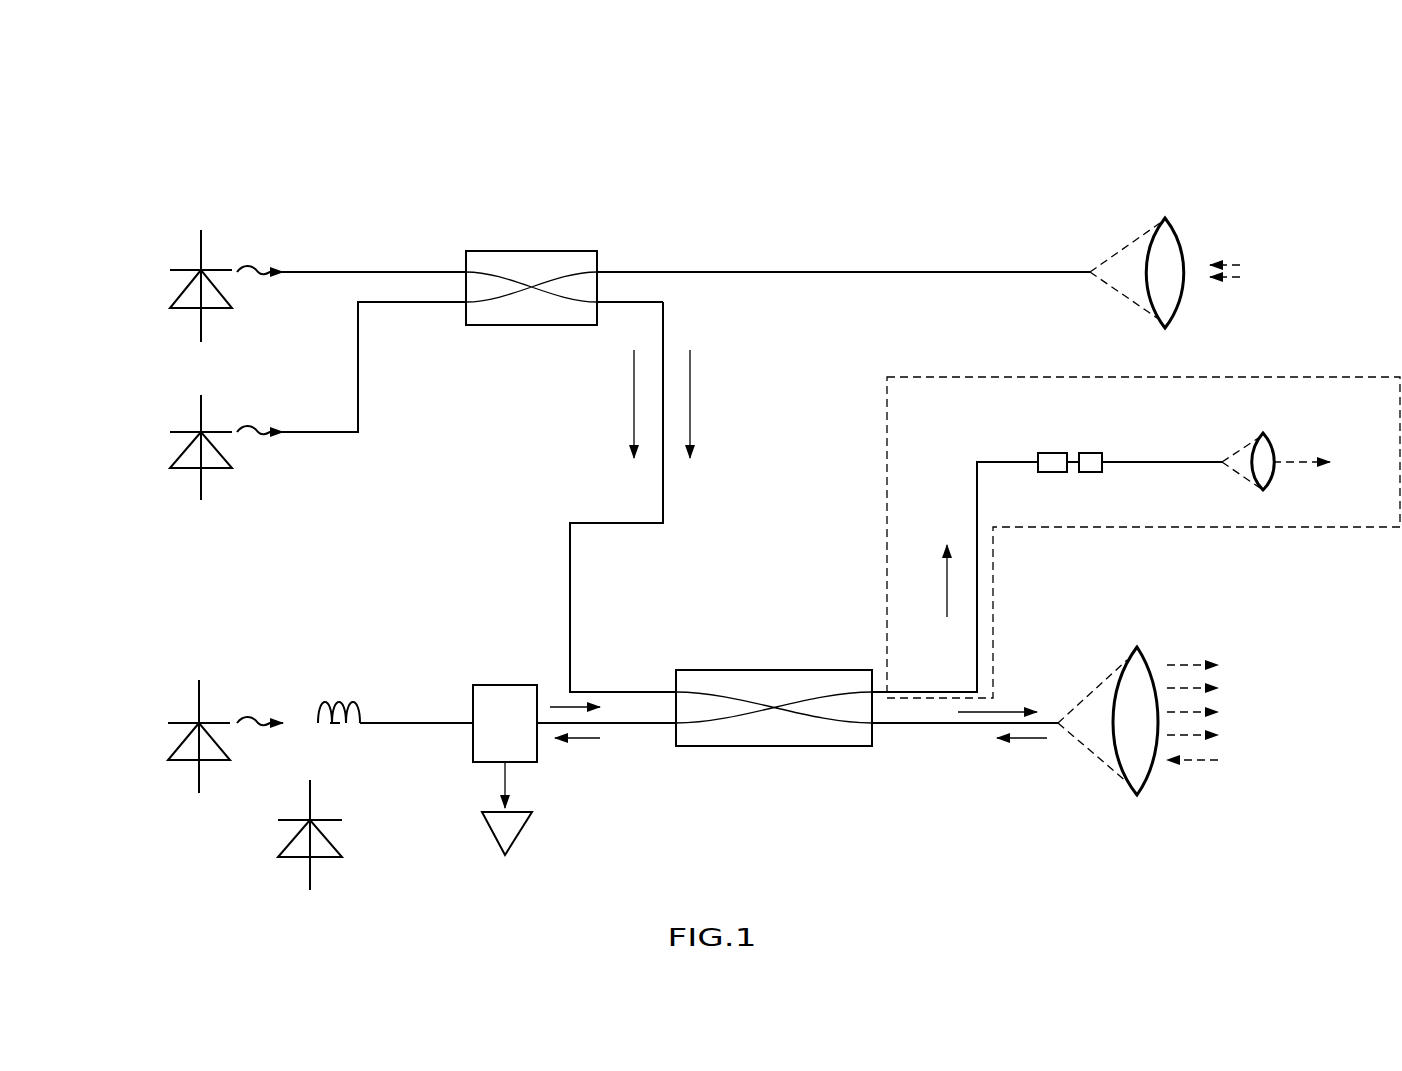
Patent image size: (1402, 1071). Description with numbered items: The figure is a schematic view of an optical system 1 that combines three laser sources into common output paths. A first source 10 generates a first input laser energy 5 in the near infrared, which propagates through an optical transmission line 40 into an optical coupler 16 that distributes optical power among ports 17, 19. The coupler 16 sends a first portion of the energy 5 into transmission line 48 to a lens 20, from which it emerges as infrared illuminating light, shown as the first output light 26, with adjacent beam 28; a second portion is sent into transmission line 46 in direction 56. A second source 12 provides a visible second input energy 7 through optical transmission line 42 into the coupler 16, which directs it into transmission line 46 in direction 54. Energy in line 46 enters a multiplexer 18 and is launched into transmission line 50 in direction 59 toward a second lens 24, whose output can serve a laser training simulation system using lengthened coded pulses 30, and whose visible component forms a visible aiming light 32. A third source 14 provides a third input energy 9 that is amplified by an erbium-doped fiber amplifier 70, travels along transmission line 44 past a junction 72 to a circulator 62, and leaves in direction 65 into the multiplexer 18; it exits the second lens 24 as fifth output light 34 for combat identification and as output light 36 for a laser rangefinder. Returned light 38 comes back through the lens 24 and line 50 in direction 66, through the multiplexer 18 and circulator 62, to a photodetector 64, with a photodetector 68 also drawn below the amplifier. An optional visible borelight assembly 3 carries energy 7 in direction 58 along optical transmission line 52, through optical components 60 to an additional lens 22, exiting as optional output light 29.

The optical system 1 is at (1005, 170).
The visible borelight assembly 3 is at (1292, 527).
The first input laser energy 5 is at (262, 274).
The second input energy 7 is at (262, 434).
The third input energy 9 is at (262, 725).
The first source 10 is at (178, 245).
The second source 12 is at (178, 408).
The third source 14 is at (178, 690).
The optical coupler 16 is at (532, 230).
The port 17 is at (597, 272).
The multiplexer 18 is at (724, 750).
The port 19 is at (600, 312).
The lens 20 is at (1190, 230).
The additional lens 22 is at (1282, 425).
The second lens 24 is at (1150, 780).
The first output light 26 is at (1222, 265).
The incoming beam 28 is at (1222, 277).
The optional output light 29 is at (1305, 462).
The coded pulses 30 is at (1212, 660).
The visible aiming light 32 is at (1215, 688).
The fifth output light 34 is at (1215, 712).
The output light 36 is at (1215, 735).
The returned light 38 is at (1205, 762).
The optical transmission line 40 is at (333, 272).
The optical transmission line 42 is at (358, 390).
The transmission line 44 is at (422, 726).
The transmission line 46 is at (663, 510).
The transmission line 48 is at (850, 272).
The transmission line 50 is at (925, 727).
The optical transmission line 52 is at (977, 492).
The direction 54 is at (627, 437).
The direction 56 is at (700, 372).
The direction 58 is at (945, 600).
The direction 59 is at (1010, 710).
The optical components 60 is at (1068, 448).
The circulator 62 is at (473, 685).
The photodetector 64 is at (522, 850).
The direction 65 is at (560, 705).
The direction 66 is at (590, 742).
The photodetector 68 is at (325, 866).
The erbium-doped fiber amplifier 70 is at (343, 690).
The junction 72 is at (336, 740).